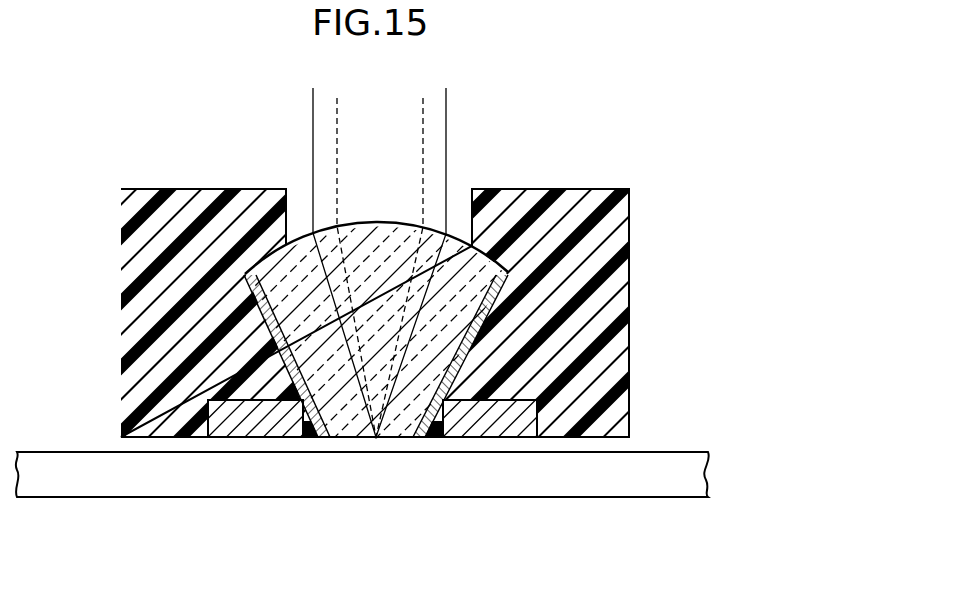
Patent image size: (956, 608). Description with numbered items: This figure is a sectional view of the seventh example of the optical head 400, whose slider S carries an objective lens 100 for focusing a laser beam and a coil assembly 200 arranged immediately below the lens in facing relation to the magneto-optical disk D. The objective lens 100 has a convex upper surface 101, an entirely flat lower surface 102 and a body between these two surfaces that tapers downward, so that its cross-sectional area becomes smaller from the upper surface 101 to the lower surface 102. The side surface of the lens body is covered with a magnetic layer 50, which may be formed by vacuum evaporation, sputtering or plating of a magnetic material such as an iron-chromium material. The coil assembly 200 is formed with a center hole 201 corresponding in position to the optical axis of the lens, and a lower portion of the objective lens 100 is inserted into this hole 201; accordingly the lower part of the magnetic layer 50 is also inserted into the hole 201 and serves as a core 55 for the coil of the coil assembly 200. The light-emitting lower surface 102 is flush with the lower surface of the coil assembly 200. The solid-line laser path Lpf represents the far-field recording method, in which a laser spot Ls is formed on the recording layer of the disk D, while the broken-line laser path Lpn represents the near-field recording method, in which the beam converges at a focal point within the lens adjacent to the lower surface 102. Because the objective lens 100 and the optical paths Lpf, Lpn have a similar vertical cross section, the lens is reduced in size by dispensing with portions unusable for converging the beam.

The objective lens 100 is at (397, 221).
The convex upper surface 101 is at (377, 223).
The lower surface 102 is at (404, 440).
The coil assembly 200 is at (225, 445).
The center hole 201 is at (315, 440).
The optical head 400 is at (634, 220).
The magnetic layer 50 is at (292, 388).
The core 55 is at (443, 414).
The slider S is at (634, 288).
The magneto-optical disk D is at (682, 452).
The laser path Lpf is at (311, 118).
The laser path Lpn is at (424, 117).
The laser spot Ls is at (376, 440).